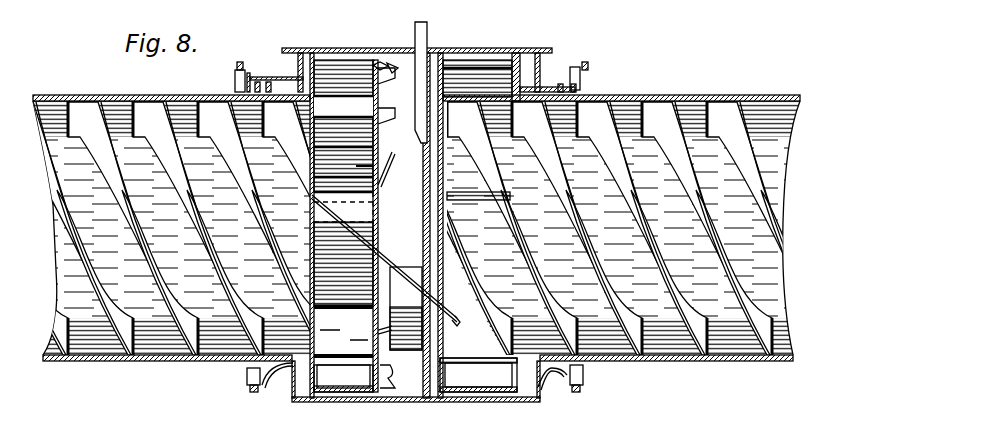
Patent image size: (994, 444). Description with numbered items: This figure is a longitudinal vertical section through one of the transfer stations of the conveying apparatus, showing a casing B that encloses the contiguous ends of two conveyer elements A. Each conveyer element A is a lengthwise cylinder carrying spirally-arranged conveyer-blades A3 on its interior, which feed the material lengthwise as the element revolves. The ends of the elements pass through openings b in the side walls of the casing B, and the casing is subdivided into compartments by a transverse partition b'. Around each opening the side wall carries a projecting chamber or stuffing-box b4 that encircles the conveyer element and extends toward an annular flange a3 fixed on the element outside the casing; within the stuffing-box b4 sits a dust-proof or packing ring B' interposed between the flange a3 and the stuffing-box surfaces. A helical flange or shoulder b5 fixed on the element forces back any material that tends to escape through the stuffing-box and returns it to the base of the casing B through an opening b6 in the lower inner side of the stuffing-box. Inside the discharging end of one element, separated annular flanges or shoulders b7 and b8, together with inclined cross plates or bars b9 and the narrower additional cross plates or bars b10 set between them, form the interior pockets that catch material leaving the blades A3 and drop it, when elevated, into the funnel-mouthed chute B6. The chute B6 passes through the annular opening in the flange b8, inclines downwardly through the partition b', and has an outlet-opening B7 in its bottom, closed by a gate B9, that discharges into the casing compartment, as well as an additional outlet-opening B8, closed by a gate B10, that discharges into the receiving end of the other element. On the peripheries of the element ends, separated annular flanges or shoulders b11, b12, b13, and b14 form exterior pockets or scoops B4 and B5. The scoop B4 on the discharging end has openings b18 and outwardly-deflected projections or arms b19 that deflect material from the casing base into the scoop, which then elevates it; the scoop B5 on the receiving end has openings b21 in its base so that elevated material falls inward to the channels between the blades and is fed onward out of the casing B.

The conveyer element A is at (112, 95).
The spirally-arranged conveyer-blades A3 is at (200, 230).
The annular flange a3 is at (240, 62).
The opening b is at (418, 78).
The transverse partition b' is at (415, 88).
The chamber or stuffing-box b4 is at (575, 68).
The helical flange or shoulder b5 is at (266, 80).
The opening b6 is at (296, 385).
The annular flange or shoulder b7 is at (333, 117).
The annular flange or shoulder b8 is at (378, 118).
The cross plate or bar b9 is at (339, 136).
The additional cross plate or bar b10 is at (333, 169).
The annular flange or shoulder b11 is at (305, 62).
The annular flange or shoulder b12 is at (378, 80).
The annular flange or shoulder b13 is at (522, 62).
The annular flange or shoulder b14 is at (443, 62).
The opening b18 is at (376, 64).
The outwardly-deflected projection or arm b19 is at (395, 55).
The opening b21 is at (462, 200).
The casing B is at (417, 212).
The dust-proof or packing ring B' is at (413, 232).
The pocket or scoop B4 is at (337, 62).
The pocket or scoop B5 is at (473, 70).
The chute B6 is at (359, 227).
The outlet-opening B7 is at (398, 268).
The additional outlet-opening B8 is at (459, 305).
The gate B9 is at (406, 308).
The gate B10 is at (432, 162).